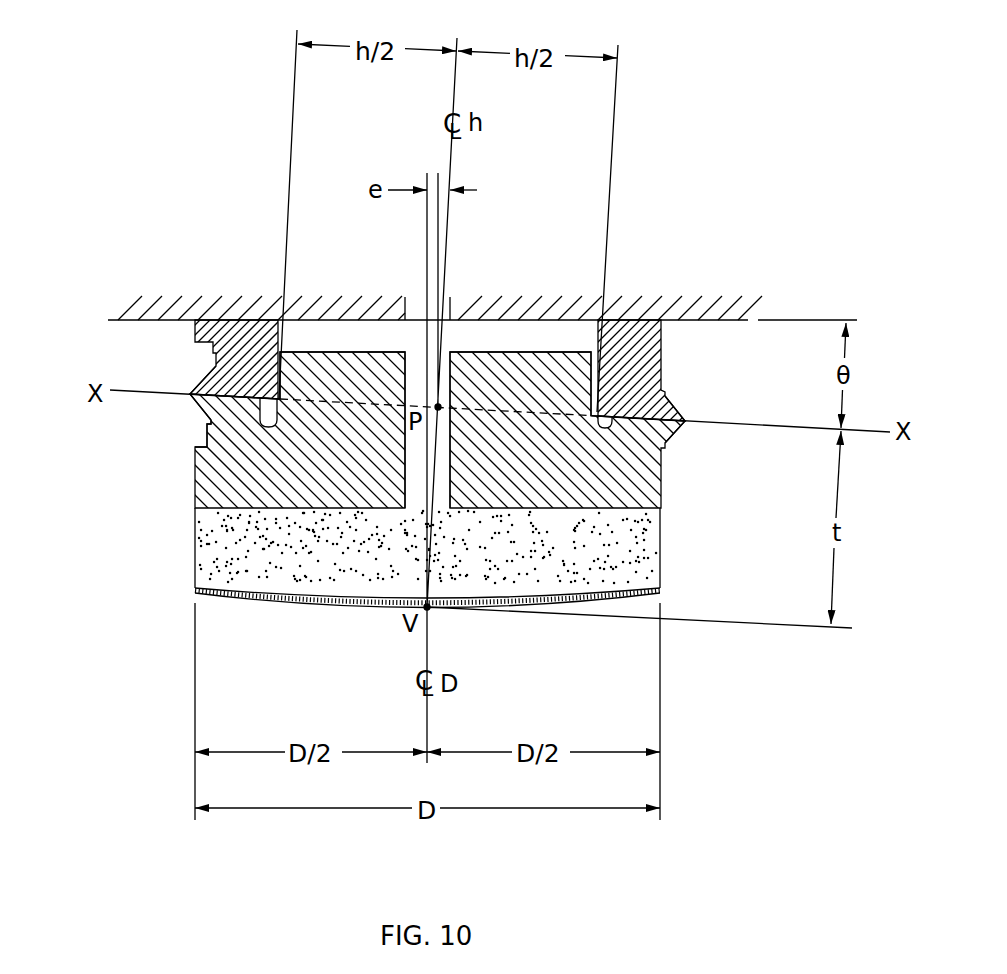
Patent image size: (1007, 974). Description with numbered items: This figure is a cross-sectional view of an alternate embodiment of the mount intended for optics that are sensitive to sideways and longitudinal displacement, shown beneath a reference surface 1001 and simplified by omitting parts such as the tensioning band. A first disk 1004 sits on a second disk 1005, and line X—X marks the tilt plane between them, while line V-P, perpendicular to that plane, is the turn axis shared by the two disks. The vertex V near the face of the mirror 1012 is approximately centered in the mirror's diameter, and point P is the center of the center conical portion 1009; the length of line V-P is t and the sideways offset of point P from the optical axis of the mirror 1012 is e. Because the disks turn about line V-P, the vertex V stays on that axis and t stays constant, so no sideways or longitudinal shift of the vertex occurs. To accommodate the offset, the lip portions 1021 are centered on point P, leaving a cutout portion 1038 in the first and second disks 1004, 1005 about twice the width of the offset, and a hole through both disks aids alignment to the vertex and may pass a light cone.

The workpiece surface 1001 is at (701, 323).
The first disk 1004 is at (662, 369).
The second disk 1005 is at (194, 479).
The center conical portion 1009 is at (549, 349).
The mirror 1012 is at (357, 605).
The lip portions 1021 is at (192, 407).
The cutout portion 1038 is at (206, 436).